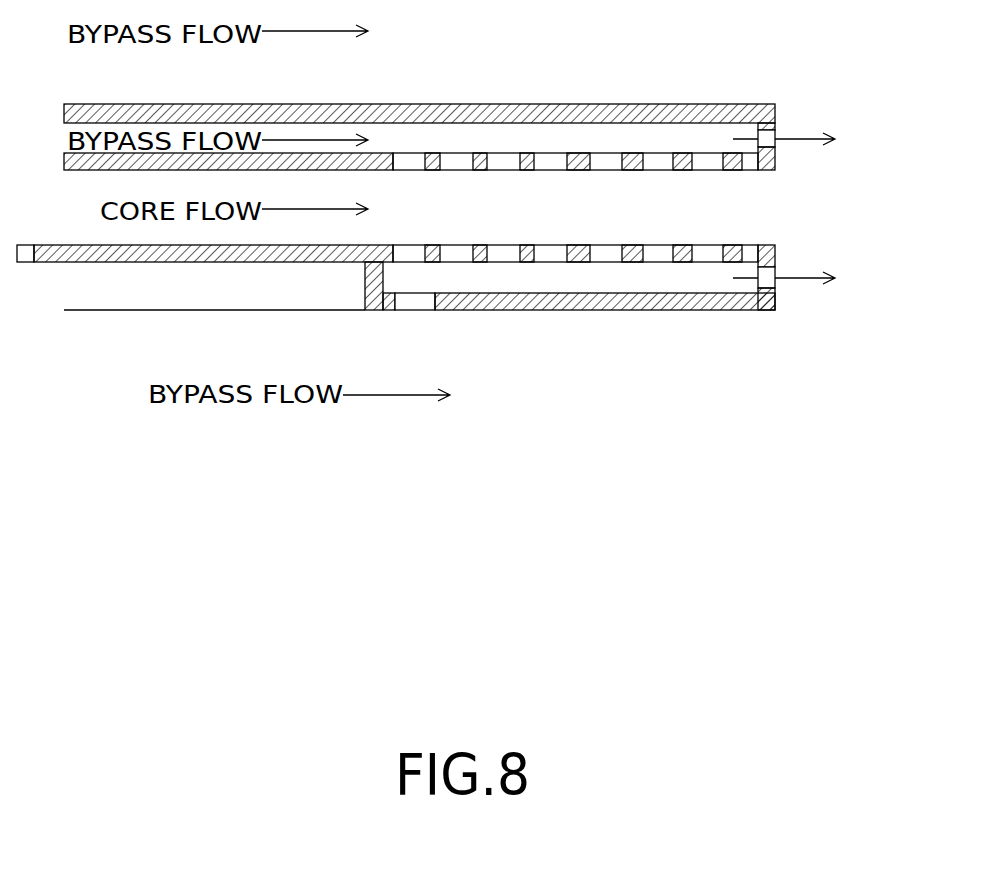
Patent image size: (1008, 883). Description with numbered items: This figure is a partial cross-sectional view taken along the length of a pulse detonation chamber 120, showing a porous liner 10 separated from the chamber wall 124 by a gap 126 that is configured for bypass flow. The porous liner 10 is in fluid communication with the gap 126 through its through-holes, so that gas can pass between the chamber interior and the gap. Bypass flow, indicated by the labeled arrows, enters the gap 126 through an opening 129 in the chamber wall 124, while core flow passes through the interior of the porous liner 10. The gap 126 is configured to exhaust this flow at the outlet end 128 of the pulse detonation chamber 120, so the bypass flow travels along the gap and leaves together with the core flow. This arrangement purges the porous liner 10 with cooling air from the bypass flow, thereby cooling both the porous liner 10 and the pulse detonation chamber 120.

The porous liner 10 is at (775, 246).
The pulse detonation chamber 120 is at (118, 352).
The chamber wall 124 is at (173, 275).
The gap 126 is at (774, 133).
The outlet end 128 is at (775, 300).
The opening 129 is at (420, 310).